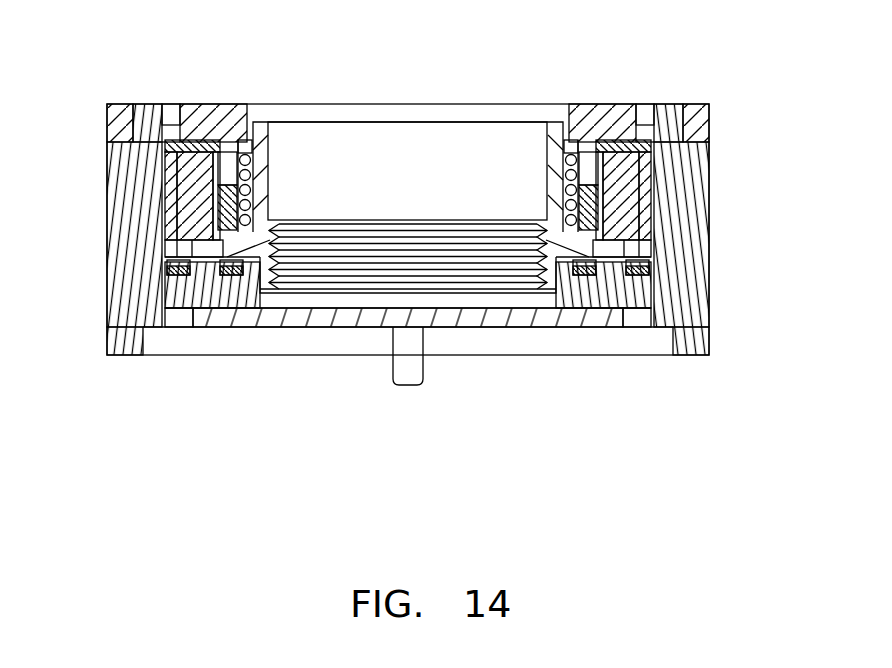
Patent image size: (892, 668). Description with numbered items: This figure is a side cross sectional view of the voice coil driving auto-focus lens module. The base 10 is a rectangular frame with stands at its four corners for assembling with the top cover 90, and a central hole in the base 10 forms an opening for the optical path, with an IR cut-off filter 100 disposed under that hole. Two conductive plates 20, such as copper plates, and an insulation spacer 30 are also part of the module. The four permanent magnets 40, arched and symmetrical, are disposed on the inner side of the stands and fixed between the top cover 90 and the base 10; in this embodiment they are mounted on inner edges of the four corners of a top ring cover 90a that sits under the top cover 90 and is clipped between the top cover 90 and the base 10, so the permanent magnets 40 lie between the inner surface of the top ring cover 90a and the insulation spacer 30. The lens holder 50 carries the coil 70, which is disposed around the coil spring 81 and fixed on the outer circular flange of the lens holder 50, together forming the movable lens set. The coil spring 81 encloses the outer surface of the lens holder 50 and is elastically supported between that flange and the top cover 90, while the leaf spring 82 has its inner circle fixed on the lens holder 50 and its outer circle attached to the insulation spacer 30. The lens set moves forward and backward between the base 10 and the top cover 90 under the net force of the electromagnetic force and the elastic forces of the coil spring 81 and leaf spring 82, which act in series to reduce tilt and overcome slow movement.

The base 10 is at (687, 292).
The conductive plates 20 is at (165, 276).
The insulation spacer 30 is at (165, 266).
The permanent magnets 40 is at (165, 188).
The lens holder 50 is at (547, 104).
The coil 70 is at (598, 220).
The coil spring 81 is at (165, 178).
The leaf spring 82 is at (165, 250).
The top cover 90 is at (625, 104).
The top ring cover 90a is at (648, 159).
The IR cut-off filter 100 is at (545, 320).